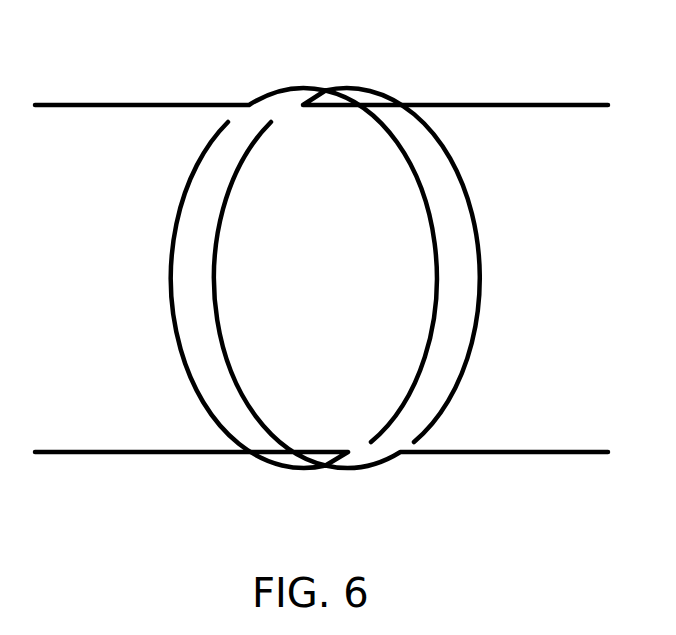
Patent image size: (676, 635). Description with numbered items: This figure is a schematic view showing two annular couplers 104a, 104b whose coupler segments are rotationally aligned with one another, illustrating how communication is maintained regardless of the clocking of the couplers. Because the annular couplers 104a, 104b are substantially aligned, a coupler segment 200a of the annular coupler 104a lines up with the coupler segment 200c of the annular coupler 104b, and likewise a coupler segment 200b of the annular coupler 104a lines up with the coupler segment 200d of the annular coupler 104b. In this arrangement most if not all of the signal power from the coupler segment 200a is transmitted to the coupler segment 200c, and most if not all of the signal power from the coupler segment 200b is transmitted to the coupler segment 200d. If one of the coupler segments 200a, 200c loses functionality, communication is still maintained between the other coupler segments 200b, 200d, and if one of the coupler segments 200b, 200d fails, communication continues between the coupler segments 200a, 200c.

The annular coupler 104a is at (273, 69).
The annular coupler 104b is at (373, 67).
The coupler segment 200a is at (168, 279).
The coupler segment 200b is at (436, 282).
The coupler segment 200c is at (222, 215).
The coupler segment 200d is at (483, 270).